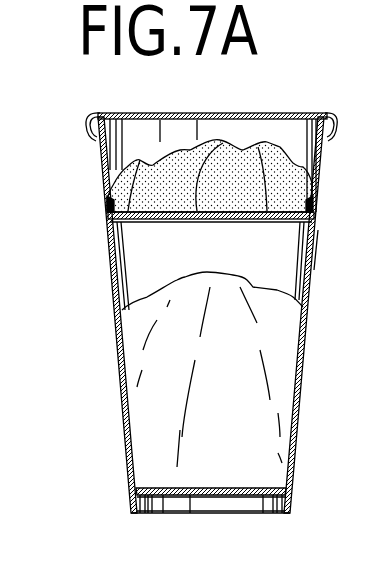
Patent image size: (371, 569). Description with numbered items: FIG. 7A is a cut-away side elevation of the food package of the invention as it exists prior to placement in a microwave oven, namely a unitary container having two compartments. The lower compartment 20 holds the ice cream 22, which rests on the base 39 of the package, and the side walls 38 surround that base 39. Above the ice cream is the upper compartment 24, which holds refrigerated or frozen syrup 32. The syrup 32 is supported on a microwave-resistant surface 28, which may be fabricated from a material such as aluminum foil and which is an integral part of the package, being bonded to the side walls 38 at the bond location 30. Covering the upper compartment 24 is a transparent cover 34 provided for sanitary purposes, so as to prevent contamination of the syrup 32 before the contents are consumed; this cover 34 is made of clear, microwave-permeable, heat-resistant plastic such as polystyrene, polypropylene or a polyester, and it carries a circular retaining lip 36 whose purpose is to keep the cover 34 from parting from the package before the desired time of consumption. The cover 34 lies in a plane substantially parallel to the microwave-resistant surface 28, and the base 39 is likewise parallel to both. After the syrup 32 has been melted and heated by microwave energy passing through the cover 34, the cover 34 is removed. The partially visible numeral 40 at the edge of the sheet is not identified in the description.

The lower compartment 20 is at (127, 448).
The ice cream 22 is at (232, 410).
The upper compartment 24 is at (150, 228).
The microwave-resistant surface 28 is at (233, 218).
The bond location 30 is at (106, 200).
The syrup 32 is at (227, 170).
The transparent cover 34 is at (205, 111).
The circular retaining lip 36 is at (88, 121).
The side walls 38 is at (317, 247).
The base 39 is at (252, 491).
The partial numeral (clipped) 40 is at (368, 353).